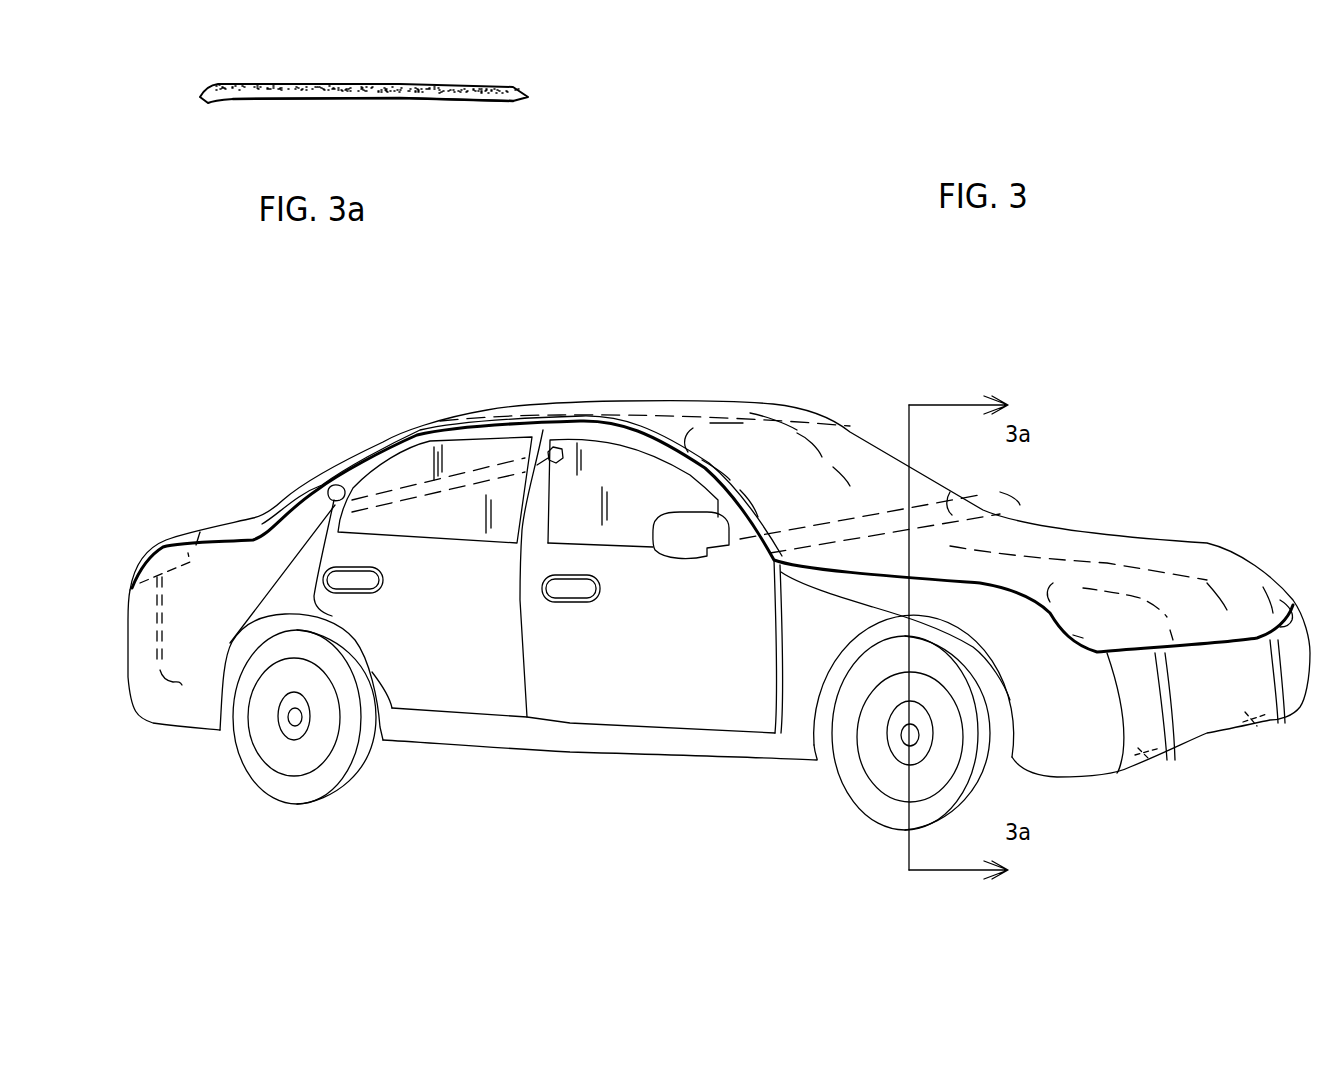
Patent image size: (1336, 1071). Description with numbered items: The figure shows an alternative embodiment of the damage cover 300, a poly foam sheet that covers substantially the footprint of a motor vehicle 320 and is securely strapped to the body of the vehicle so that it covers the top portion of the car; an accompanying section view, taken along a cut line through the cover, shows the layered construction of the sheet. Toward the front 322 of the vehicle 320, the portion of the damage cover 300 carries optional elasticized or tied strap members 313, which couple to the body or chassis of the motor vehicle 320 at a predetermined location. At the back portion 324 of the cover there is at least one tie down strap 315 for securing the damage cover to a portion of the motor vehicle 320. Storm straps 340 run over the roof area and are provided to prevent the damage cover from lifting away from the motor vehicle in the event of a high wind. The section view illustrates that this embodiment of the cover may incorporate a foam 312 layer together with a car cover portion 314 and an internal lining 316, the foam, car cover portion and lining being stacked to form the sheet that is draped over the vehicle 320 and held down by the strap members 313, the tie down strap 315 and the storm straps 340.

In FIG. 3, the damage cover 300 is at (915, 370).
In FIG. 3A, the foam 312 is at (457, 88).
In FIG. 3, the strap members 313 is at (1173, 735).
In FIG. 3A, the car cover portion 314 is at (527, 90).
In FIG. 3, the tie down strap 315 is at (160, 673).
In FIG. 3A, the internal lining 316 is at (308, 99).
In FIG. 3, the motor vehicle 320 is at (678, 642).
In FIG. 3, the front 322 is at (1178, 522).
In FIG. 3, the back portion 324 is at (253, 453).
In FIG. 3, the storm straps 340 is at (457, 473).